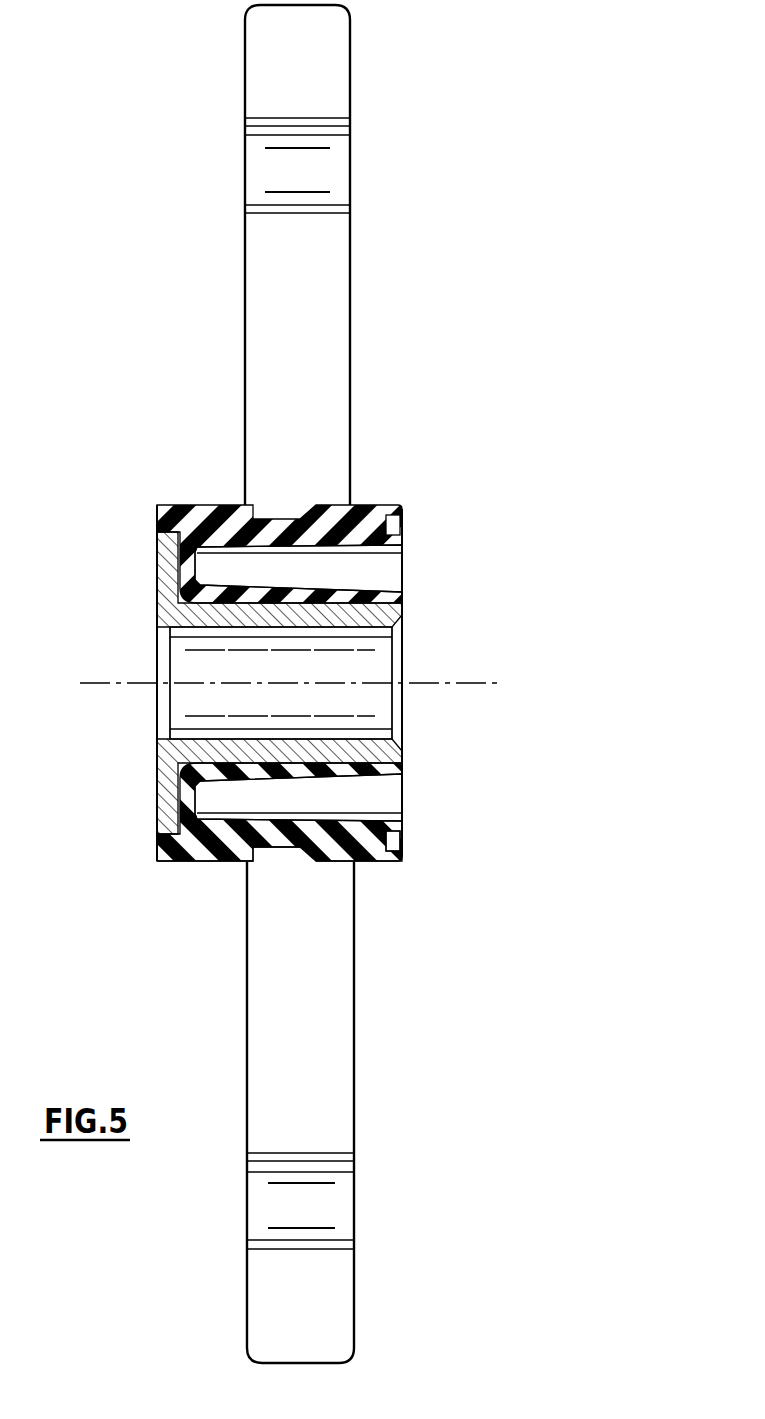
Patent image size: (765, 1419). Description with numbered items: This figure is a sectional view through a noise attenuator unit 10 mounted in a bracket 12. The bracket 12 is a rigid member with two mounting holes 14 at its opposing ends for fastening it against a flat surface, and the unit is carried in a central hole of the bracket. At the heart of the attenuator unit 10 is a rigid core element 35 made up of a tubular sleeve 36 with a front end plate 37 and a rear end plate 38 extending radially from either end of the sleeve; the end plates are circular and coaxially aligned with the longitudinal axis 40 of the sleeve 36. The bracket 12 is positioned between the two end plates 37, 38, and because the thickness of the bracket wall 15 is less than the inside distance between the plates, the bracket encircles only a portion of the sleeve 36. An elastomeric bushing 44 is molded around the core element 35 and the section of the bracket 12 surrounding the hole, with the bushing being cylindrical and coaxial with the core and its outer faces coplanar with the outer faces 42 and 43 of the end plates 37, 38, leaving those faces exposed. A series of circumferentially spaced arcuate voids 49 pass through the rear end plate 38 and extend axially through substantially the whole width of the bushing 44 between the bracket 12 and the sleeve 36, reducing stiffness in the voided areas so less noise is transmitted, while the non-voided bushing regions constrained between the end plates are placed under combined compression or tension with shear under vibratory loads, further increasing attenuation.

The attenuator unit 10 is at (140, 537).
The bracket 12 is at (372, 1076).
The mounting holes 14 is at (342, 170).
The bracket wall 15 is at (246, 473).
The core element 35 is at (403, 752).
The tubular sleeve 36 is at (290, 739).
The front end plate 37 is at (157, 592).
The rear end plate 38 is at (405, 835).
The longitudinal axis 40 is at (483, 683).
The outer face of front end plate 42 is at (157, 831).
The outer face of rear end plate 43 is at (403, 862).
The elastomeric bushing 44 is at (205, 856).
The voids 49 is at (395, 570).